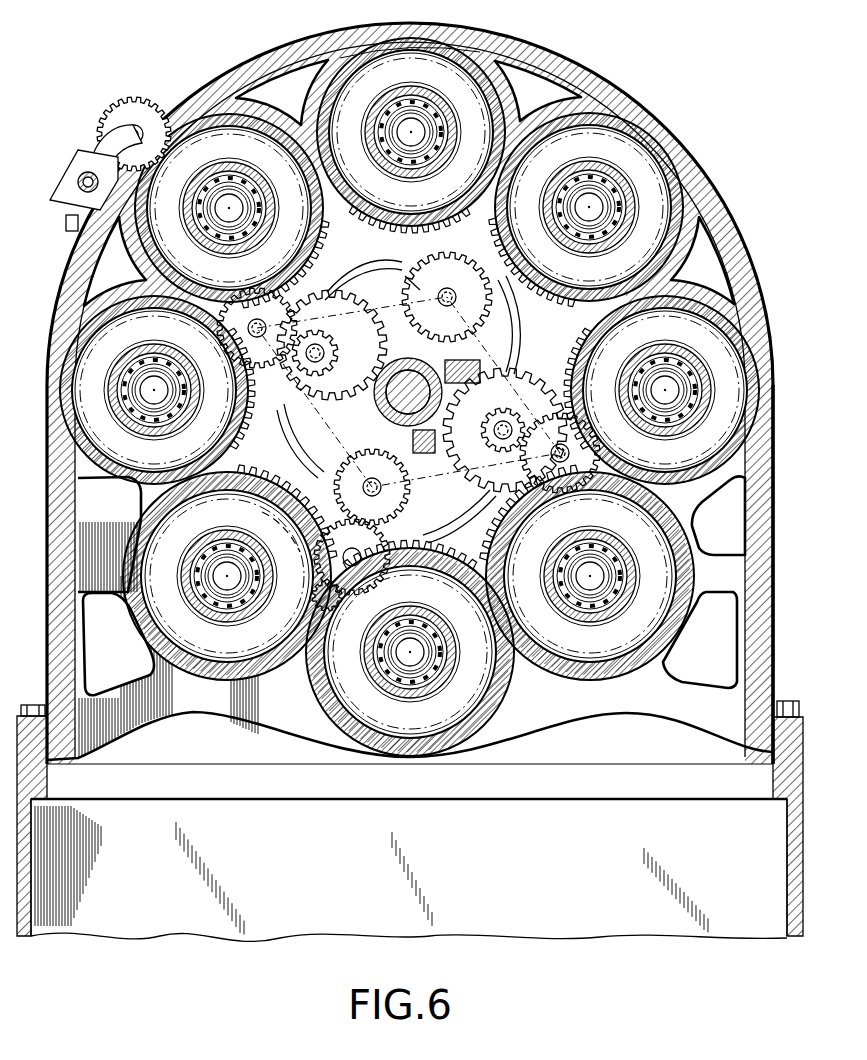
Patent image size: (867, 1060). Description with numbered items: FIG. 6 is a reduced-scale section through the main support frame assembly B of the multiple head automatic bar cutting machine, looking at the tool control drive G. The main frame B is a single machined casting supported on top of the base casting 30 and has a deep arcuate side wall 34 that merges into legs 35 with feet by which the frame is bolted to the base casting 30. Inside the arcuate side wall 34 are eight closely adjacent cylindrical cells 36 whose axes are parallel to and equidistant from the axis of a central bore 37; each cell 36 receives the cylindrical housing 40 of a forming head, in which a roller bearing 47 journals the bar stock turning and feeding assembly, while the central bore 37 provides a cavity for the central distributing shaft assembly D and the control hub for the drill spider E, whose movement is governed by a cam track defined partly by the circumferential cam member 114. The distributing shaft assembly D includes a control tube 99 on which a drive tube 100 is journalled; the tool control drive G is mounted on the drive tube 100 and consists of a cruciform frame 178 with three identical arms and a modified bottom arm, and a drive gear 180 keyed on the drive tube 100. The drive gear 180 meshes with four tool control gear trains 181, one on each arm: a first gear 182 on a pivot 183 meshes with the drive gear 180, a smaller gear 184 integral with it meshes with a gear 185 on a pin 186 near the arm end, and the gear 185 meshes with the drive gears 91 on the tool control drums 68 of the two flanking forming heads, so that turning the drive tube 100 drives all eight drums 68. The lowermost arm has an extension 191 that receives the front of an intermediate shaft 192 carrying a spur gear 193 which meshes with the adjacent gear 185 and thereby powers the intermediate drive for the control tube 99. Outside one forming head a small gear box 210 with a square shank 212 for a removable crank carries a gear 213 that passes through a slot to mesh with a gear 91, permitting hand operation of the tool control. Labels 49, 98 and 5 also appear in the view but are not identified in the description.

The base casting 30 is at (262, 912).
The deep arcuate side wall 34 is at (553, 63).
The legs 35 is at (774, 576).
The cylindrical cells 36 is at (685, 642).
The central bore 37 is at (296, 427).
The cylindrical housing 40 is at (470, 58).
The roller bearing 47 is at (594, 548).
The spindle shaft 49 is at (602, 573).
The tool control drum 68 is at (195, 404).
The drive gear 91 is at (86, 340).
The central drive shaft 98 is at (403, 428).
The control tube 99 is at (336, 352).
The drive tube 100 is at (322, 346).
The circumferential cam member 114 is at (385, 268).
The cruciform frame 178 is at (484, 392).
The drive gear 180 is at (500, 410).
The tool control gear train 181 is at (518, 304).
The first gear 182 is at (408, 390).
The pivot 183 is at (396, 451).
The smaller gear 184 is at (407, 371).
The gear 185 is at (216, 322).
The pin 186 is at (538, 506).
The extension 191 is at (284, 538).
The intermediate shaft 192 is at (313, 604).
The spur gear 193 is at (372, 584).
The gear box 210 is at (86, 158).
The square shank 212 is at (65, 201).
The gear 213 is at (115, 108).
The gear 5 is at (484, 232).
The main support frame assembly B is at (633, 92).
The tool control drive G is at (386, 306).
The drill spider E is at (316, 430).
The central distributing shaft assembly D is at (386, 452).